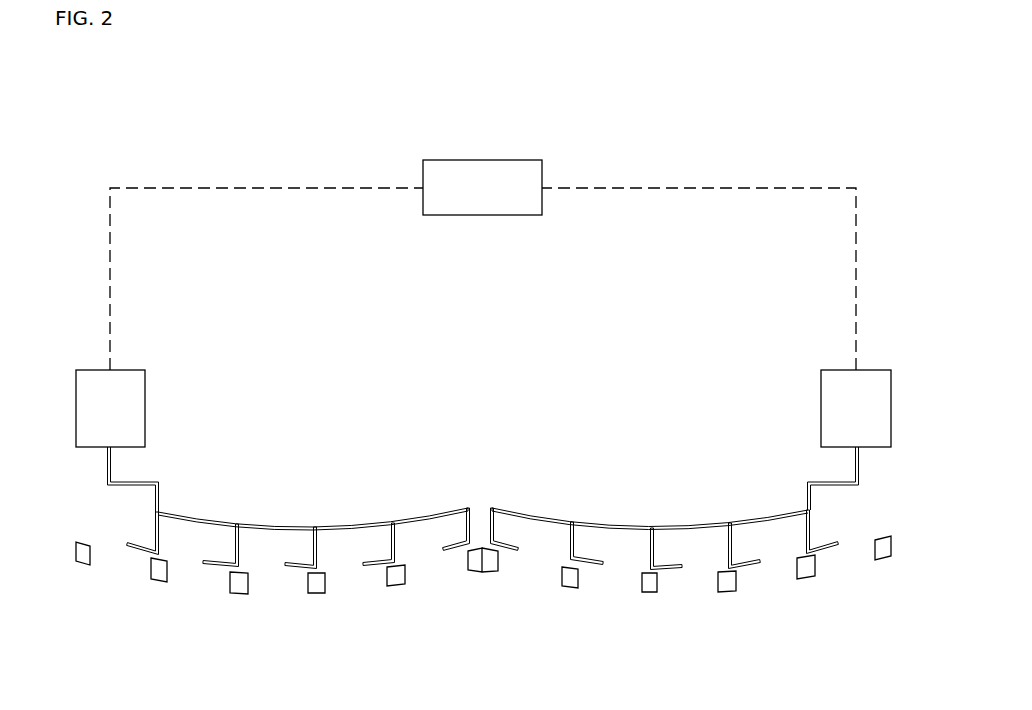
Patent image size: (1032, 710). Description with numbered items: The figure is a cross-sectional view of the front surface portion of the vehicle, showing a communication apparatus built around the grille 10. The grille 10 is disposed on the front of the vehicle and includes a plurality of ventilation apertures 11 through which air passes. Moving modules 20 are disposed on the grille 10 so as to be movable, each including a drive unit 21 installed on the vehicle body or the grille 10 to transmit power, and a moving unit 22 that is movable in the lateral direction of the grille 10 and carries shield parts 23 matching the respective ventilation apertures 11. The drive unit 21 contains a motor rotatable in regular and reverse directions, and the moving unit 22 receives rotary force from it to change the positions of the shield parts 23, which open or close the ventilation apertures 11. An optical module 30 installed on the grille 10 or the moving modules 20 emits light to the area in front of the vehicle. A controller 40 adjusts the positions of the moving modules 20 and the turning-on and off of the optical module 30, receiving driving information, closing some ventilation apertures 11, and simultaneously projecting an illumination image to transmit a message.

The grille 10 is at (392, 590).
The ventilation apertures 11 is at (290, 583).
The moving modules 20 is at (483, 503).
The drive unit 21 is at (133, 393).
The moving unit 22 is at (203, 517).
The shield parts 23 is at (313, 547).
The optical module 30 is at (213, 565).
The controller 40 is at (483, 168).